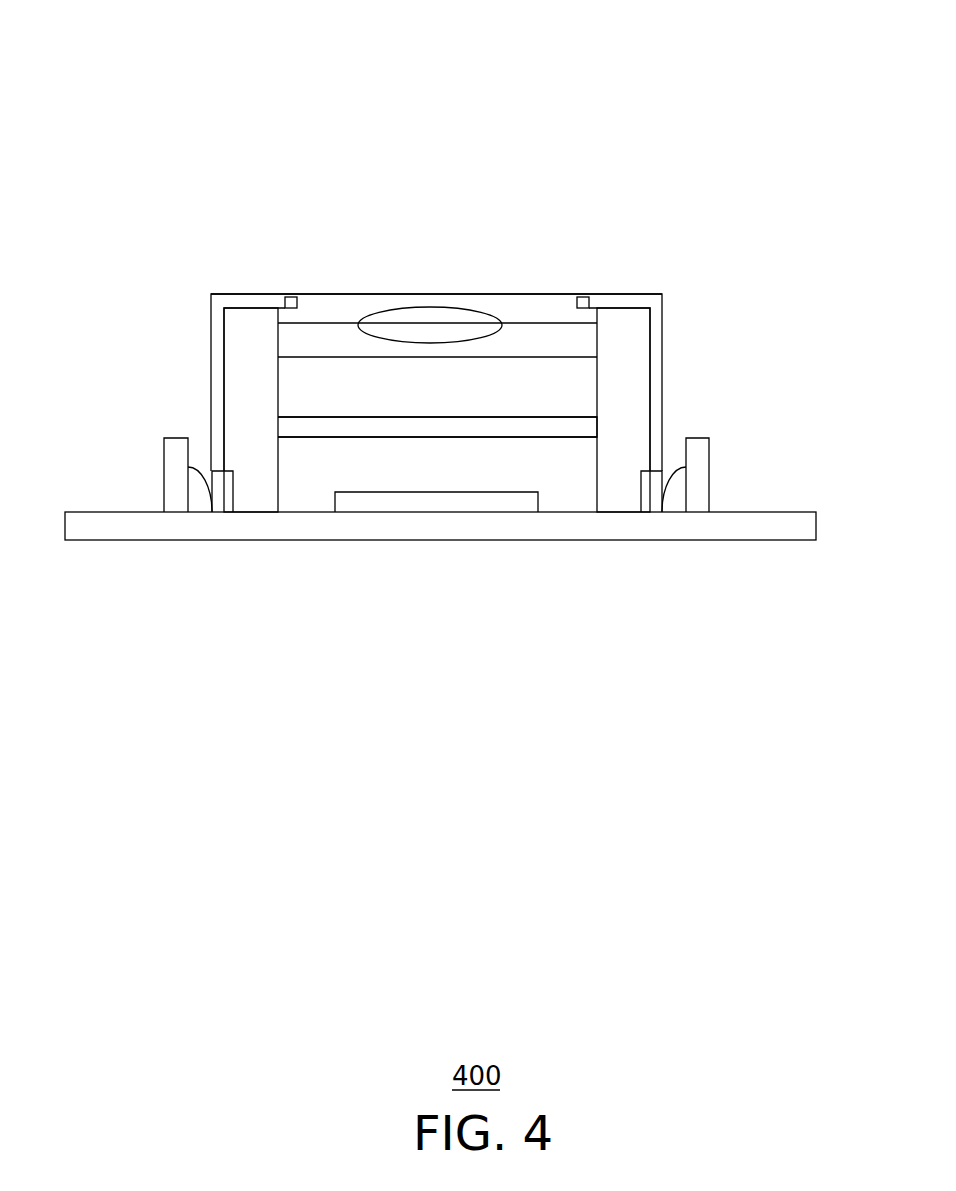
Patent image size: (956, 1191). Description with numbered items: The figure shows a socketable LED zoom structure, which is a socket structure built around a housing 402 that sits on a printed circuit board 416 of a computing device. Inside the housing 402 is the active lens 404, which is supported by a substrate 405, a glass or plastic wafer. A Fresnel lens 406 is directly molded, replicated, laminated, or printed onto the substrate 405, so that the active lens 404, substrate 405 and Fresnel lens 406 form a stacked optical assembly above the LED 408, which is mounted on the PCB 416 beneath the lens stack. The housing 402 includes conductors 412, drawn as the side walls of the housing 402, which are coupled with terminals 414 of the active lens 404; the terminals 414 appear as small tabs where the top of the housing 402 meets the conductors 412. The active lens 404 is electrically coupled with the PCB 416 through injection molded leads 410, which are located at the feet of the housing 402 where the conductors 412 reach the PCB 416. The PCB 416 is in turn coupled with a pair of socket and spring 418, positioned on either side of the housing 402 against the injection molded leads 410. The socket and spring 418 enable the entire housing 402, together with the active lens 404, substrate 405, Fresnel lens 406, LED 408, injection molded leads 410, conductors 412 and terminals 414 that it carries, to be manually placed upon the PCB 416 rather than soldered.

The housing 402 is at (222, 68).
The active lens 404 is at (391, 294).
The substrate 405 is at (522, 386).
The Fresnel lens 406 is at (362, 426).
The LED 408 is at (506, 500).
The injection molded leads 410 is at (219, 498).
The conductors 412 is at (208, 366).
The terminals 414 is at (287, 295).
The printed circuit board 416 is at (458, 529).
The socket and spring 418 is at (160, 458).